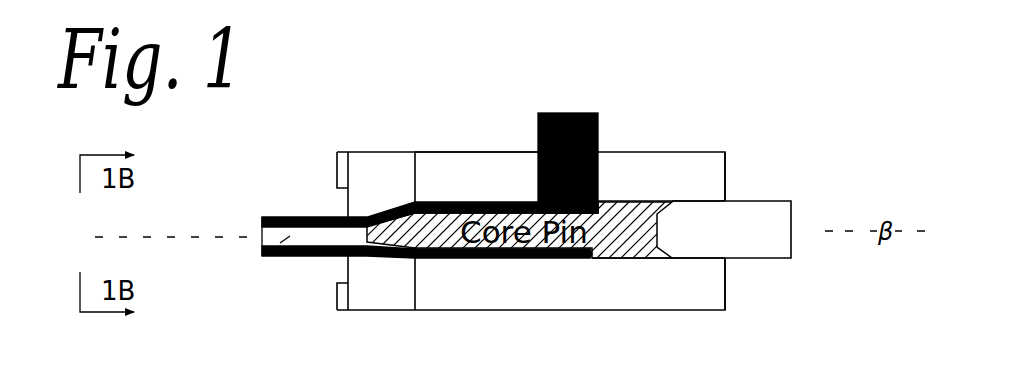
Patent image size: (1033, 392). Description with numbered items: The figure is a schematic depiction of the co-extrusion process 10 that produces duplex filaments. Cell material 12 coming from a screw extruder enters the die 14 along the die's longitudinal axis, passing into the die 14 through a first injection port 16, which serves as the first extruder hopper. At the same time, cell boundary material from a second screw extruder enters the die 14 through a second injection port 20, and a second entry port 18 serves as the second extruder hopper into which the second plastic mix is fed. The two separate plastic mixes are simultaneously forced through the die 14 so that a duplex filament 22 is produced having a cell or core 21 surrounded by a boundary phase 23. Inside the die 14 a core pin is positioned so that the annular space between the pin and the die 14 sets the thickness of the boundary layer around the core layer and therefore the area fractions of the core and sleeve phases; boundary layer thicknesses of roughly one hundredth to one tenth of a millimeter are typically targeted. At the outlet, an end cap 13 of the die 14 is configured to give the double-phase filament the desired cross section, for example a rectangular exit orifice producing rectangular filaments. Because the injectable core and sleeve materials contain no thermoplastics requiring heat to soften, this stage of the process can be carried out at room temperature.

The co-extrusion process 10 is at (394, 74).
The cell material 12 is at (763, 225).
The end cap 13 is at (345, 268).
The die 14 is at (597, 290).
The first injection port 16 is at (727, 258).
The second entry port 18 is at (585, 113).
The second injection port 20 is at (538, 153).
The core 21 is at (262, 257).
The duplex filament 22 is at (270, 217).
The boundary phase 23 is at (315, 220).